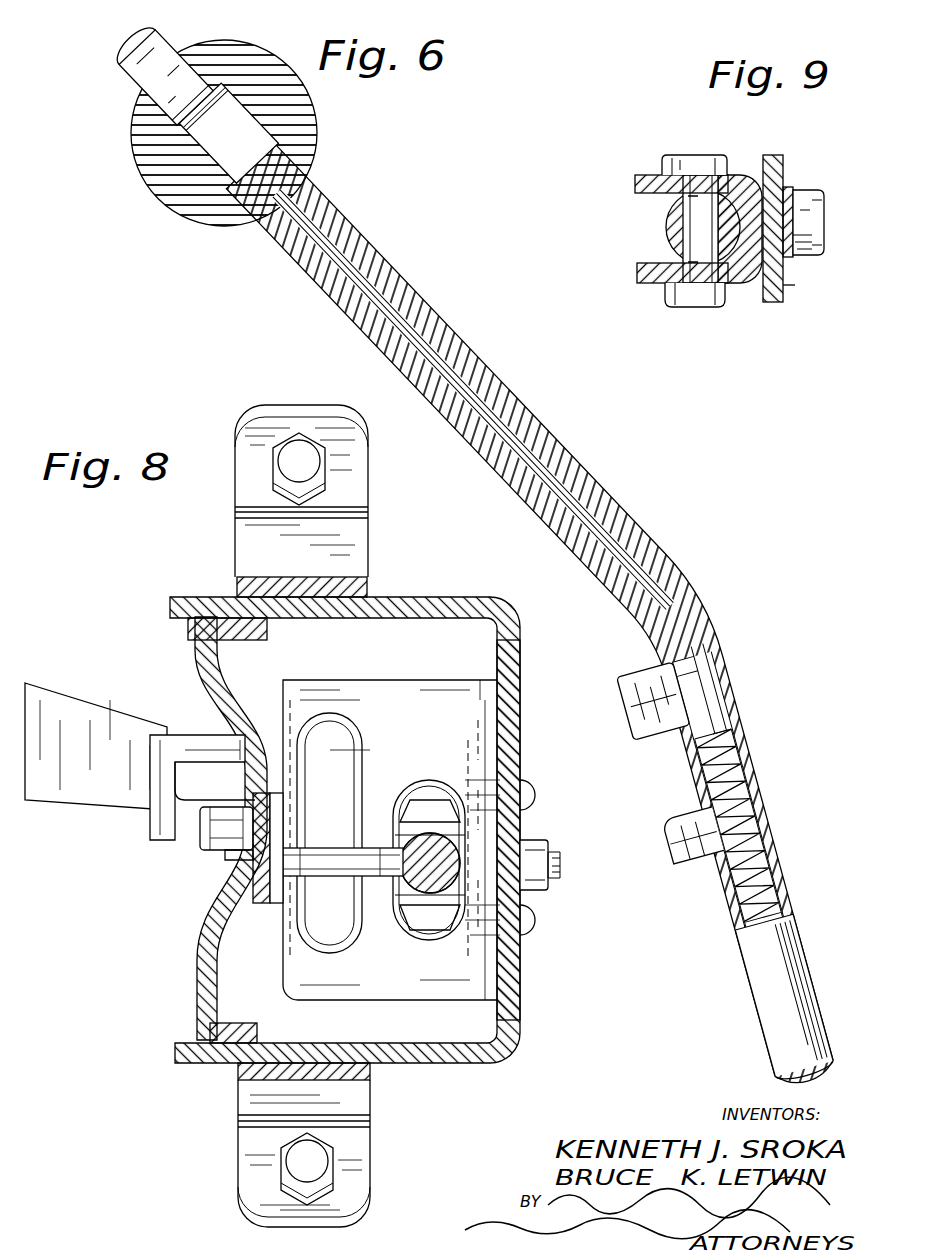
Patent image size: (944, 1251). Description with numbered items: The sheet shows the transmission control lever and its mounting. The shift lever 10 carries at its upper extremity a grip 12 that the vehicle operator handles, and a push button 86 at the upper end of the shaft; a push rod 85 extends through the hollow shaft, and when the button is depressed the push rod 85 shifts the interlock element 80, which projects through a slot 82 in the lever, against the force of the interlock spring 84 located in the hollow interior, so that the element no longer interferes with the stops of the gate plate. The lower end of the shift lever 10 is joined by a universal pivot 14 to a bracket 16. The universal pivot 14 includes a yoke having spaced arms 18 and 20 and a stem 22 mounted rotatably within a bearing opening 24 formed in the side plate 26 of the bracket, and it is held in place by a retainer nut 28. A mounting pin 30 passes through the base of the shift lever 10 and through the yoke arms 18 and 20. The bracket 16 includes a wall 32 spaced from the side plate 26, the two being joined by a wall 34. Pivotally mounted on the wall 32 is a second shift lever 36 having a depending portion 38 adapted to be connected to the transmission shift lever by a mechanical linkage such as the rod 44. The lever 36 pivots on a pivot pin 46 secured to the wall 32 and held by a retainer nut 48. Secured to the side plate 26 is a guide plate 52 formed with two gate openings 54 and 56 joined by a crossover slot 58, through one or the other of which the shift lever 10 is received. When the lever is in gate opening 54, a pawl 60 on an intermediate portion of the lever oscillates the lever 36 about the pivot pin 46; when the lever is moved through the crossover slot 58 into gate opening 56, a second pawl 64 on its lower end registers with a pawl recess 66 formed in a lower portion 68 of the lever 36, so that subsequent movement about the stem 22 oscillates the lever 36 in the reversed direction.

In FIG. 6, the shift lever 10 is at (452, 328).
In FIG. 9, the shift lever 10 is at (668, 230).
In FIG. 8, the shift lever 10 is at (445, 836).
In FIG. 6, the grip 12 is at (148, 183).
In FIG. 9, the universal pivot 14 is at (745, 290).
In FIG. 9, the bracket 16 is at (796, 148).
In FIG. 8, the bracket 16 is at (533, 679).
In FIG. 9, the yoke arm 18 is at (645, 175).
In FIG. 9, the yoke arm 20 is at (645, 283).
In FIG. 9, the stem 22 is at (814, 212).
In FIG. 8, the stem 22 is at (548, 855).
In FIG. 9, the bearing opening 24 is at (790, 190).
In FIG. 9, the side plate 26 is at (785, 295).
In FIG. 9, the retainer nut 28 is at (800, 258).
In FIG. 8, the retainer nut 28 is at (550, 882).
In FIG. 9, the mounting pin 30 is at (672, 200).
In FIG. 8, the wall 32 is at (197, 950).
In FIG. 8, the wall 34 is at (430, 597).
In FIG. 8, the shift lever 36 is at (278, 680).
In FIG. 8, the depending portion 38 is at (150, 828).
In FIG. 8, the rod 44 is at (45, 695).
In FIG. 8, the pivot pin 46 is at (200, 845).
In FIG. 8, the retainer nut 48 is at (210, 856).
In FIG. 8, the guide plate 52 is at (497, 752).
In FIG. 8, the gate opening 54 is at (332, 955).
In FIG. 8, the gate opening 56 is at (430, 965).
In FIG. 8, the crossover slot 58 is at (378, 838).
In FIG. 6, the pawl 60 is at (690, 852).
In FIG. 8, the second pawl 64 is at (318, 877).
In FIG. 8, the pawl recess 66 is at (277, 905).
In FIG. 8, the lower portion 68 is at (255, 895).
In FIG. 6, the interlock element 80 is at (636, 696).
In FIG. 6, the slot 82 is at (700, 773).
In FIG. 6, the interlock spring 84 is at (770, 822).
In FIG. 6, the push rod 85 is at (515, 434).
In FIG. 6, the push button 86 is at (150, 78).